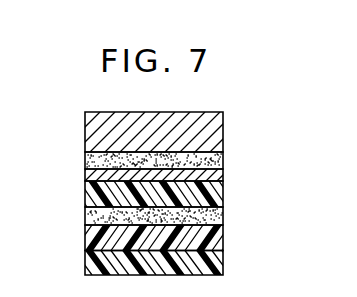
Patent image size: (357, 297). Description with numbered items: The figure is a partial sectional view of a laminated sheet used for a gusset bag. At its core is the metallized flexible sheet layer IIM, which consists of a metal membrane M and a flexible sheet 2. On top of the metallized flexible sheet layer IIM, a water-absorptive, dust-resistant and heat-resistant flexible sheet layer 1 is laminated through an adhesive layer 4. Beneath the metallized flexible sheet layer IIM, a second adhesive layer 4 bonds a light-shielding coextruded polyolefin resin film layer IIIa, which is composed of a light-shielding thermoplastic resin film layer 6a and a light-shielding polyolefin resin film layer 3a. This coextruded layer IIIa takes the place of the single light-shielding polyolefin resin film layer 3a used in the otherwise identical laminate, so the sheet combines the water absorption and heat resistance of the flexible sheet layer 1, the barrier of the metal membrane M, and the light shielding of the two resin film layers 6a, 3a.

The flexible sheet layer 1 is at (223, 135).
The adhesive layer 4 is at (84, 210).
The metal membrane M is at (223, 175).
The flexible sheet 2 is at (223, 202).
The metallized flexible sheet layer IIM is at (186, 187).
The light-shielding thermoplastic resin film layer 6a is at (223, 238).
The light-shielding polyolefin resin film layer 3a is at (223, 263).
The light-shielding coextruded polyolefin resin film layer IIIa is at (191, 248).